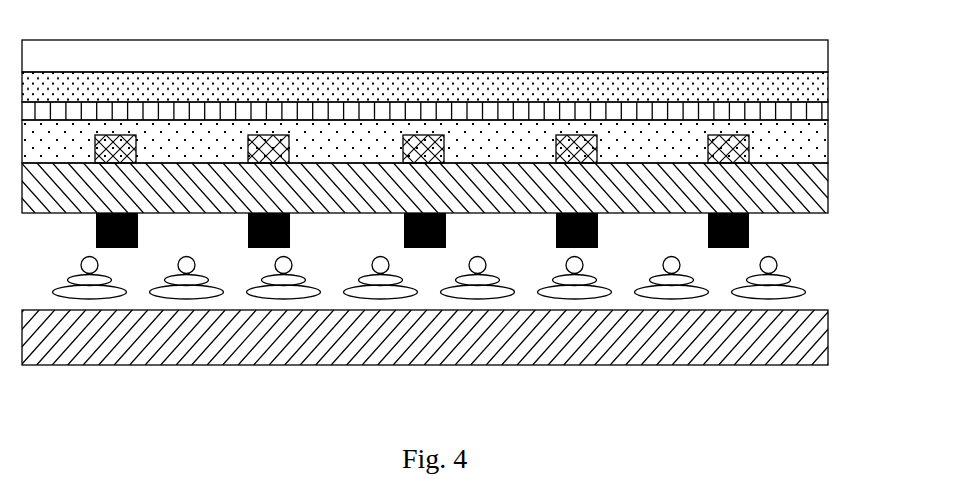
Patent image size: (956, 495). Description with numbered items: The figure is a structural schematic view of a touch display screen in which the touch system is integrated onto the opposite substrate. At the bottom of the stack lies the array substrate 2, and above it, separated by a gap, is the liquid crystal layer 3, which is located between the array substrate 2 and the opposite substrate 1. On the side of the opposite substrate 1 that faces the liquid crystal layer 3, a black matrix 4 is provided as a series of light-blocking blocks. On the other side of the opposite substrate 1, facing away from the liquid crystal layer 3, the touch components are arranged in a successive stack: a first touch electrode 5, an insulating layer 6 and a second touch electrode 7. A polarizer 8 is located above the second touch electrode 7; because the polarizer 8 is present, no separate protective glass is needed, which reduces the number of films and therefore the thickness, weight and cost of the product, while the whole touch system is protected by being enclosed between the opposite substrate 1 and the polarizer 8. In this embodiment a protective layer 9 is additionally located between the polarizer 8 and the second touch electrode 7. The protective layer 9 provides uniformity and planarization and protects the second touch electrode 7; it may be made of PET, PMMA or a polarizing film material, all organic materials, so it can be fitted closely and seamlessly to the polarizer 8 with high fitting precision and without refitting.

The opposite substrate 1 is at (797, 186).
The array substrate 2 is at (792, 337).
The liquid crystal layer 3 is at (773, 281).
The black matrix 4 is at (749, 229).
The first touch electrode 5 is at (749, 149).
The insulating layer 6 is at (805, 128).
The second touch electrode 7 is at (805, 110).
The polarizer 8 is at (805, 58).
The protective layer 9 is at (805, 88).